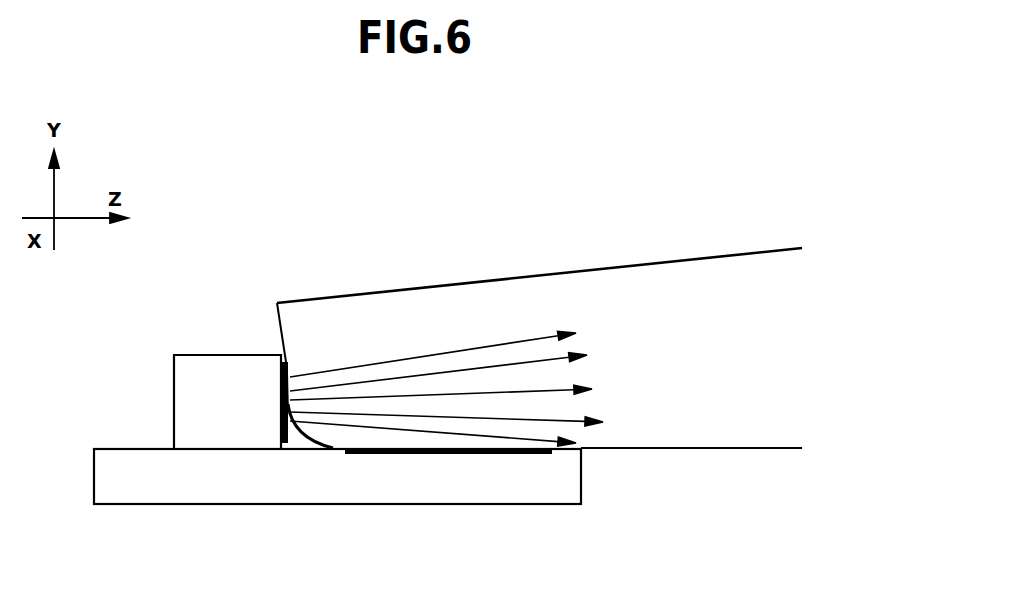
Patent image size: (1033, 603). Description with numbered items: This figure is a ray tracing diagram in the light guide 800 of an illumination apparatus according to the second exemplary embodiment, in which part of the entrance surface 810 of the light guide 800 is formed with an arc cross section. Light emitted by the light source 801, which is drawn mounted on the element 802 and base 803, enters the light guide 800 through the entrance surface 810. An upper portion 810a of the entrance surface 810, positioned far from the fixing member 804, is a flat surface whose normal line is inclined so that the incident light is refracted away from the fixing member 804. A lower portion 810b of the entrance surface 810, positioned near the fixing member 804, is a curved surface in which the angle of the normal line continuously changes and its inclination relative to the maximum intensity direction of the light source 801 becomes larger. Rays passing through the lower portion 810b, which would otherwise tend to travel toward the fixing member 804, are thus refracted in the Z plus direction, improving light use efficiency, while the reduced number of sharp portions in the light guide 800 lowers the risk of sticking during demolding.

The light guide 800 is at (494, 290).
The light source 801 is at (193, 370).
The light emitting element 802 is at (280, 392).
The base substrate 803 is at (205, 492).
The fixing member 804 is at (413, 455).
The entrance surface 810 is at (289, 366).
The upper portion 810a is at (280, 326).
The lower portion 810b is at (307, 432).